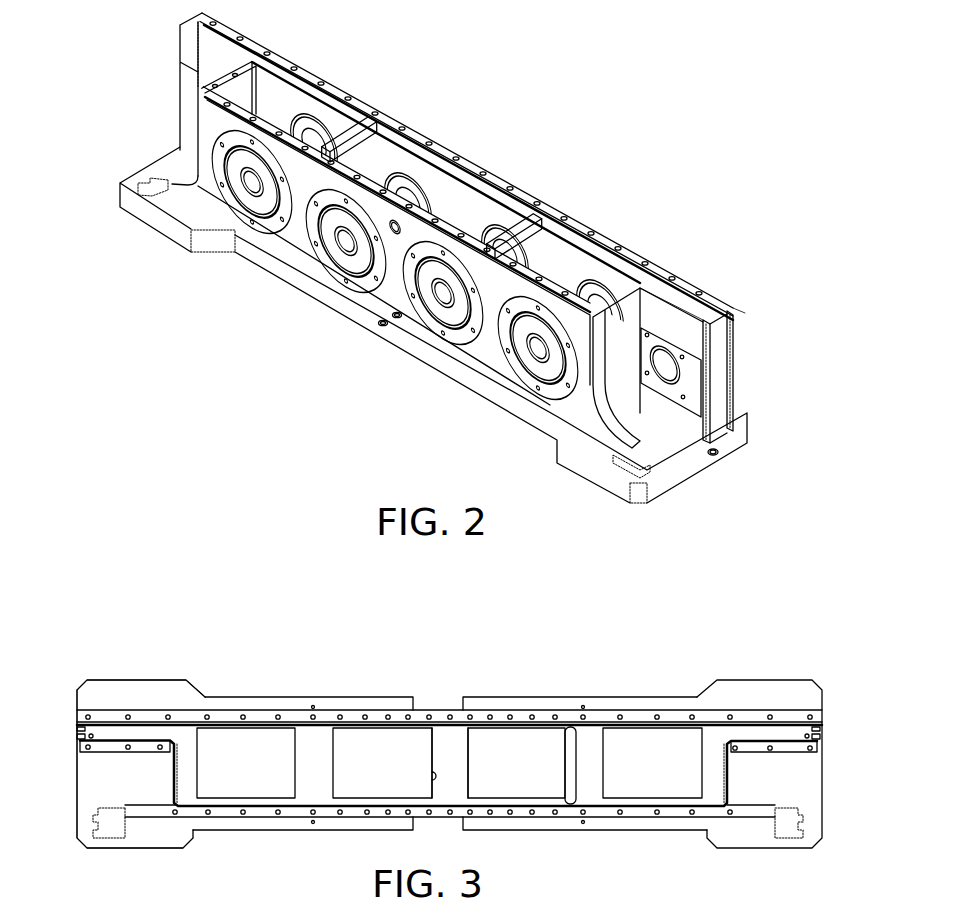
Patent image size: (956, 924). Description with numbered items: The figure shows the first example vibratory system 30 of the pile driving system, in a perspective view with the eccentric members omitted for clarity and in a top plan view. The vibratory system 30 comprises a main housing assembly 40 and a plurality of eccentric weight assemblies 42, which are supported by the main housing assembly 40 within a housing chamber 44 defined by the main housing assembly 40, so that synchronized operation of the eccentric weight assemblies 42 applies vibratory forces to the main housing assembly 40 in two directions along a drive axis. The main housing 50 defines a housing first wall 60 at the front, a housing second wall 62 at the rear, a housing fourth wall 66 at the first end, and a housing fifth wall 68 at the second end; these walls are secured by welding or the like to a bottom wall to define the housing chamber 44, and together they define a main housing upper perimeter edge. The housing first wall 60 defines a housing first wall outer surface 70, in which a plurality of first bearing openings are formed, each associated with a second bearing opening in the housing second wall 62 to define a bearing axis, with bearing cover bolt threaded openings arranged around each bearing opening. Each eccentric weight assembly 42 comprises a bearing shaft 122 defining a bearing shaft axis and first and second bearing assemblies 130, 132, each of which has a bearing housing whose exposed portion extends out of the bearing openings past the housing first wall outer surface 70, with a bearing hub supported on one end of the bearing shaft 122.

In FIG. 2, the vibratory system 30 is at (637, 82).
In FIG. 3, the vibratory system 30 is at (819, 677).
In FIG. 2, the main housing assembly 40 is at (742, 379).
In FIG. 3, the main housing assembly 40 is at (827, 720).
In FIG. 3, the eccentric weight assemblies 42 is at (260, 787).
In FIG. 3, the housing chamber 44 is at (447, 732).
In FIG. 2, the main housing 50 is at (733, 330).
In FIG. 3, the main housing 50 is at (752, 715).
In FIG. 2, the housing first wall 60 is at (212, 117).
In FIG. 3, the housing first wall 60 is at (187, 818).
In FIG. 2, the housing second wall 62 is at (330, 82).
In FIG. 3, the housing second wall 62 is at (216, 715).
In FIG. 3, the housing fourth wall 66 is at (731, 782).
In FIG. 3, the housing fifth wall 68 is at (172, 782).
In FIG. 2, the housing first wall outer surface 70 is at (297, 247).
In FIG. 2, the bearing shaft 122 is at (303, 132).
In FIG. 2, the first bearing assembly 130 is at (213, 187).
In FIG. 2, the second bearing assembly 132 is at (340, 117).